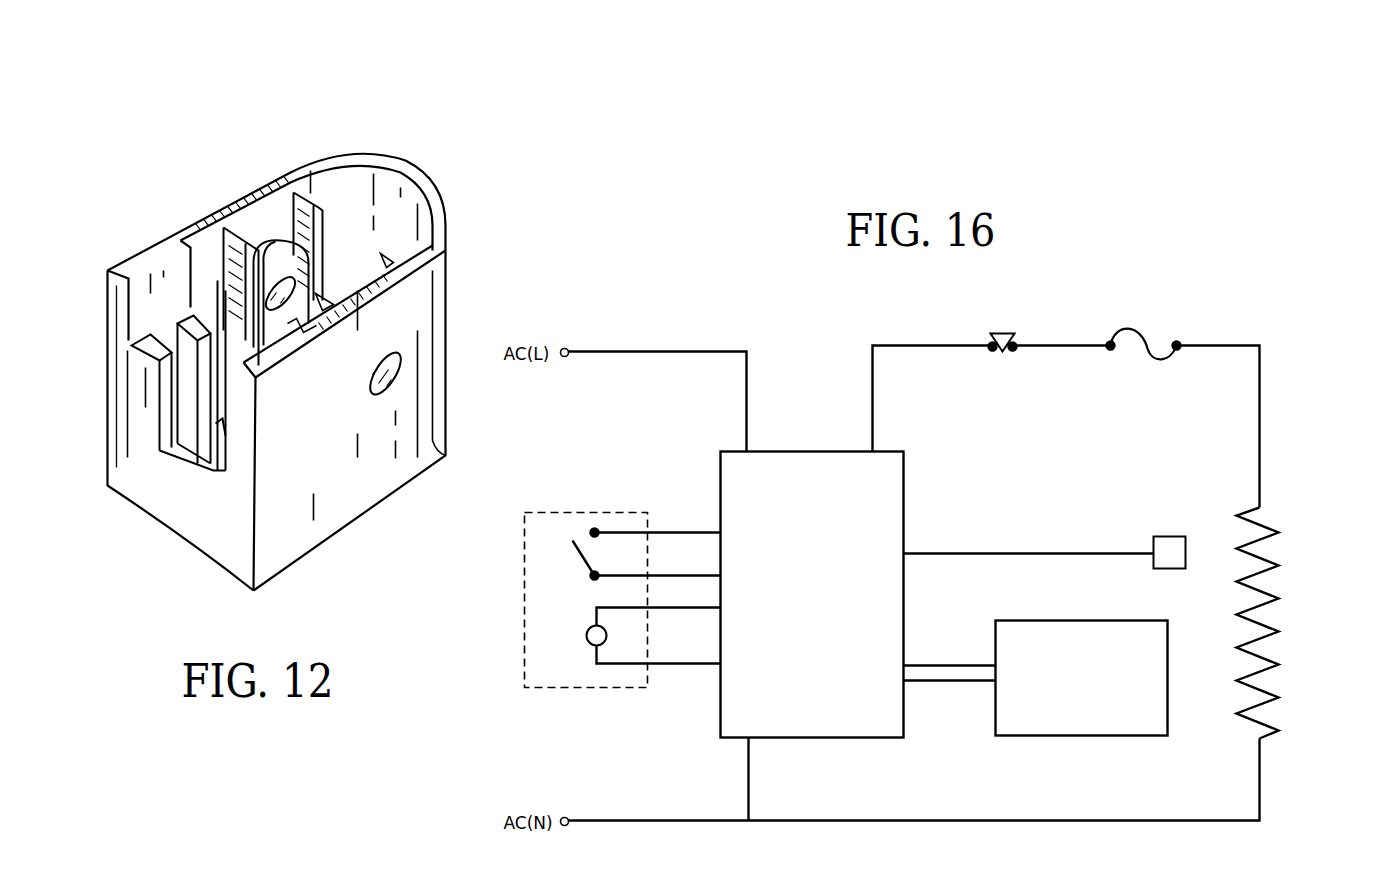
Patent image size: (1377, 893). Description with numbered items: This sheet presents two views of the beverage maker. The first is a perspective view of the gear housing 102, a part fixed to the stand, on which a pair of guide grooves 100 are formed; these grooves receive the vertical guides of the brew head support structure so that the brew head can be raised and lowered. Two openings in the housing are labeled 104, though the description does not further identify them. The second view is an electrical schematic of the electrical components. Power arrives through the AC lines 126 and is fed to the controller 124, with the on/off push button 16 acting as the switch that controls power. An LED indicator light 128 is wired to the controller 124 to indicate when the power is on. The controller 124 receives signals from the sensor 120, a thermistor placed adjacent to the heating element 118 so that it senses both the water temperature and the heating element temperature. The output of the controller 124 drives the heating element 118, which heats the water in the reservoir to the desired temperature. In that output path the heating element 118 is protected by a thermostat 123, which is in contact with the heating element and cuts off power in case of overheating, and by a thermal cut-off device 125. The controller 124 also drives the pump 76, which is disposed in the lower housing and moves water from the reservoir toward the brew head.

In FIG. 12, the guide grooves 100 is at (183, 378).
In FIG. 12, the gear housing 102 is at (445, 280).
In FIG. 12, the apertures 104 is at (280, 278).
In FIG. 16, the on/off push button 16 is at (585, 528).
In FIG. 16, the pump 76 is at (1083, 720).
In FIG. 16, the heating element 118 is at (1270, 688).
In FIG. 16, the sensor 120 is at (1170, 545).
In FIG. 16, the thermostat 123 is at (1001, 353).
In FIG. 16, the controller 124 is at (836, 681).
In FIG. 16, the thermal cut-off device 125 is at (1140, 350).
In FIG. 16, the AC lines 126 is at (656, 351).
In FIG. 16, the LED indicator light 128 is at (585, 652).